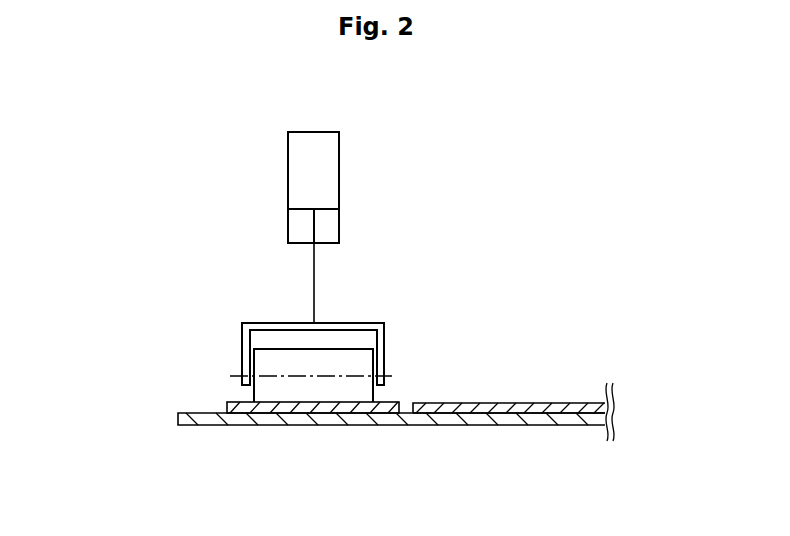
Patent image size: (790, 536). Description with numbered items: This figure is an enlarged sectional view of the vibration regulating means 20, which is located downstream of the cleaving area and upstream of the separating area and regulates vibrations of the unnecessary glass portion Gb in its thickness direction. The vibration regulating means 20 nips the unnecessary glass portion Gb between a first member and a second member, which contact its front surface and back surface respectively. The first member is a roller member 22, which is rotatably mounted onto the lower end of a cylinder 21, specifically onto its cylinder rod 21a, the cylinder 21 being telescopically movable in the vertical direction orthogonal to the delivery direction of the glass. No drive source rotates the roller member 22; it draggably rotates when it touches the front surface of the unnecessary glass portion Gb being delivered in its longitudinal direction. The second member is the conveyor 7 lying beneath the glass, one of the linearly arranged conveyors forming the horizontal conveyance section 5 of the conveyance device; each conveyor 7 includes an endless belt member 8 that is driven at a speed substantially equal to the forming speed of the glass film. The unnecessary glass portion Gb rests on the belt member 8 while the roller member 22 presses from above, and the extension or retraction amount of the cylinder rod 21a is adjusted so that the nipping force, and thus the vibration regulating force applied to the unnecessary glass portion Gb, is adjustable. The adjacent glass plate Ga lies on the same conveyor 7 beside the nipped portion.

The vibration regulating means 20 is at (447, 201).
The cylinder 21 is at (284, 172).
The cylinder rod 21a is at (316, 280).
The roller member 22 is at (229, 338).
The endless belt member 8 is at (241, 420).
The unnecessary glass portion Gb is at (322, 408).
The first glass plate Ga is at (542, 406).
The conveyor 7 is at (203, 444).
The horizontal conveyance section 5 is at (549, 448).